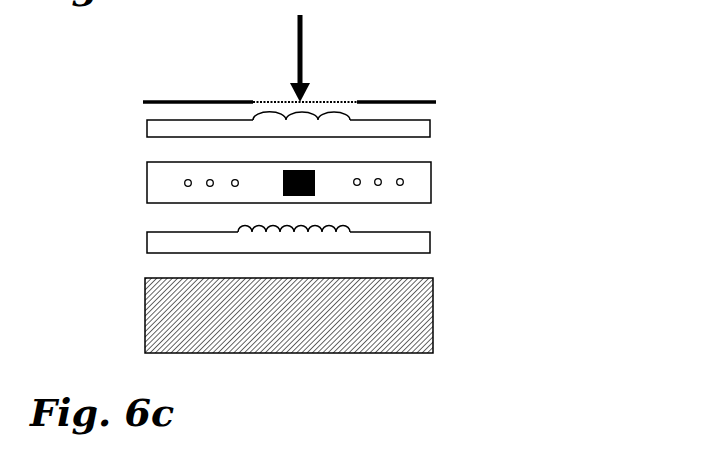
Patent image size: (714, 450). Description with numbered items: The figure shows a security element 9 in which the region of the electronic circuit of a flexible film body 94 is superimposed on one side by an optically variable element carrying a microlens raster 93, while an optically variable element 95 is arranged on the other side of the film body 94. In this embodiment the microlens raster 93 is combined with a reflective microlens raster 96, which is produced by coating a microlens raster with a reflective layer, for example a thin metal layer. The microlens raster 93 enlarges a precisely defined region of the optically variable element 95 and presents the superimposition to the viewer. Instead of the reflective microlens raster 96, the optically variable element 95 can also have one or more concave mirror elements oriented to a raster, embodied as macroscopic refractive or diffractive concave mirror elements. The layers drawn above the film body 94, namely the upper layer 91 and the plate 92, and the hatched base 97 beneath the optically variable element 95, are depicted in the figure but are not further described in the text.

The security element 9 is at (408, 40).
The top membrane layer 91 is at (425, 95).
The upper plate 92 is at (433, 133).
The microlens raster 93 is at (320, 106).
The film body 94 is at (433, 180).
The optically variable element 95 is at (433, 243).
The reflective microlens raster 96 is at (320, 230).
The hatched base 97 is at (433, 318).